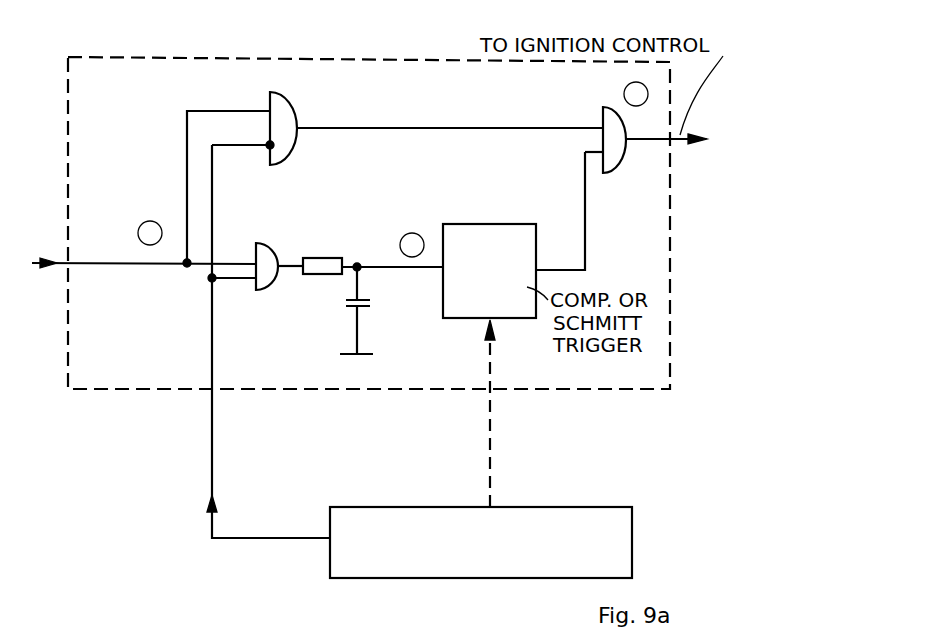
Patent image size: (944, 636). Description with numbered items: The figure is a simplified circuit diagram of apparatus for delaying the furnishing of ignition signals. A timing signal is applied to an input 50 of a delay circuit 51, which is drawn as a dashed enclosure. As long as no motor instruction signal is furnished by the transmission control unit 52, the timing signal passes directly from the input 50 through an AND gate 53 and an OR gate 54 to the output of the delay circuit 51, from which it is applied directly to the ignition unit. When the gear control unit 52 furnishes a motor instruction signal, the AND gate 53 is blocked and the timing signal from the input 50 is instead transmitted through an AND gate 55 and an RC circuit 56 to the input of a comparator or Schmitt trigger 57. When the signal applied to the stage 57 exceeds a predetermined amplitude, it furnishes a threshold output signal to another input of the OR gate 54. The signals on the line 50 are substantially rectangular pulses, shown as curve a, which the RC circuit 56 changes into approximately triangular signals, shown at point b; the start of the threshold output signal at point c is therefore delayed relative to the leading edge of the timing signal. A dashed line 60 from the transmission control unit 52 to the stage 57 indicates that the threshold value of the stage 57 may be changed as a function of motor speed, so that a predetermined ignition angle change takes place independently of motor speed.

The input 50 is at (125, 262).
The delay circuit 51 is at (164, 76).
The transmission control unit 52 is at (385, 507).
The AND gate 53 is at (286, 118).
The OR gate 54 is at (600, 122).
The AND gate 55 is at (262, 243).
The RC circuit 56 is at (362, 295).
The comparator or Schmitt trigger 57 is at (497, 229).
The dashed line 60 is at (492, 445).
The curve a is at (160, 262).
The line b is at (397, 267).
The line c is at (636, 106).